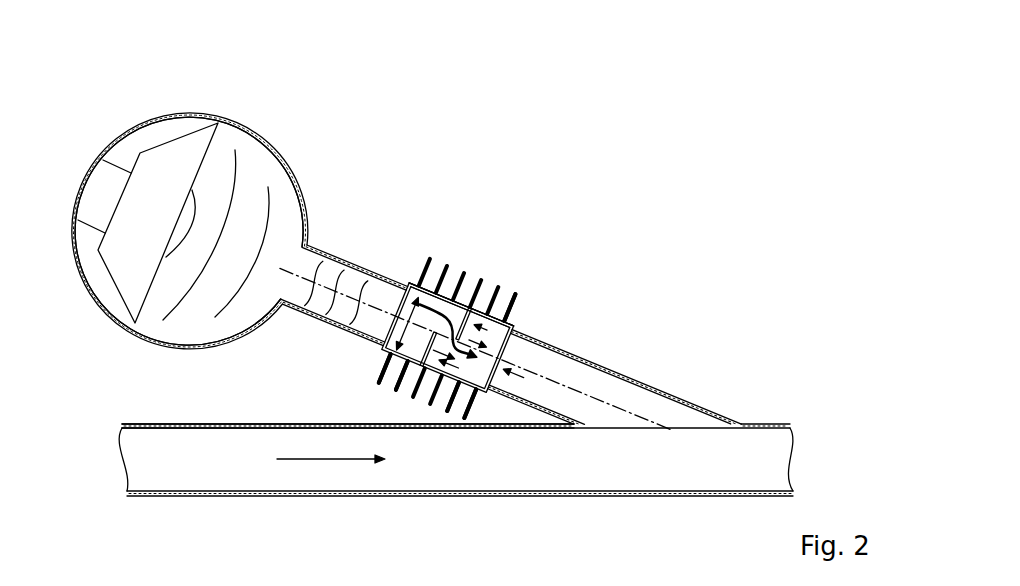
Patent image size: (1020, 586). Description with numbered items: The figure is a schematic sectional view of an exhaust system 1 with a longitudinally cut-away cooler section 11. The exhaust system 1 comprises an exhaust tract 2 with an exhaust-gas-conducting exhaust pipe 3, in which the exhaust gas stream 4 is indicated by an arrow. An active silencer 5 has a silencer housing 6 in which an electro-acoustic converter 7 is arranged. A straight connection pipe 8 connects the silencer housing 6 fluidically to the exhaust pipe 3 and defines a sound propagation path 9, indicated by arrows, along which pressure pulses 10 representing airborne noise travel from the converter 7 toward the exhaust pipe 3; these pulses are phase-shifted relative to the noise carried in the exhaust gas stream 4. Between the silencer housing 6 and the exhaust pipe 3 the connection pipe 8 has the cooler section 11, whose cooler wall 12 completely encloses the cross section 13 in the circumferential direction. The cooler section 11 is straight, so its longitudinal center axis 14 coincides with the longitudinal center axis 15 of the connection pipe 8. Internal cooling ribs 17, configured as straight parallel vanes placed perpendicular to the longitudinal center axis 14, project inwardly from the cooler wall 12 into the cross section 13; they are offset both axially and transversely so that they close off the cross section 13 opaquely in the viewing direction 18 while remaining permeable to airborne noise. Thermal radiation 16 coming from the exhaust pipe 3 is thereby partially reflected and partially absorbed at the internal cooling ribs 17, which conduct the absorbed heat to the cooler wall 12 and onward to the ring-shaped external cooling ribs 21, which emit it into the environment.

The exhaust system 1 is at (660, 155).
The exhaust tract 2 is at (165, 415).
The exhaust pipe 3 is at (245, 423).
The exhaust gas stream 4 is at (323, 495).
The active silencer 5 is at (210, 90).
The silencer housing 6 is at (249, 128).
The electro-acoustic converter 7 is at (167, 153).
The connection pipe 8 is at (650, 358).
The sound propagation path 9 is at (440, 300).
The pressure pulses 10 is at (237, 180).
The cooler section 11 is at (496, 205).
The cooler wall 12 is at (473, 323).
The cross section 13 is at (410, 290).
The longitudinal center axis 14 is at (450, 298).
The longitudinal center axis 15 is at (450, 298).
The thermal radiation 16 is at (510, 345).
The internal cooling ribs 17 is at (497, 333).
The viewing direction 18 is at (533, 400).
The external cooling ribs 21 is at (397, 392).